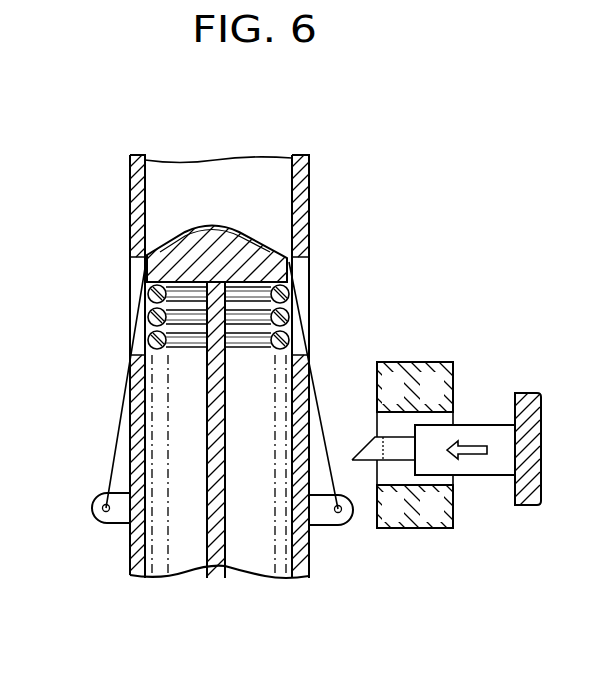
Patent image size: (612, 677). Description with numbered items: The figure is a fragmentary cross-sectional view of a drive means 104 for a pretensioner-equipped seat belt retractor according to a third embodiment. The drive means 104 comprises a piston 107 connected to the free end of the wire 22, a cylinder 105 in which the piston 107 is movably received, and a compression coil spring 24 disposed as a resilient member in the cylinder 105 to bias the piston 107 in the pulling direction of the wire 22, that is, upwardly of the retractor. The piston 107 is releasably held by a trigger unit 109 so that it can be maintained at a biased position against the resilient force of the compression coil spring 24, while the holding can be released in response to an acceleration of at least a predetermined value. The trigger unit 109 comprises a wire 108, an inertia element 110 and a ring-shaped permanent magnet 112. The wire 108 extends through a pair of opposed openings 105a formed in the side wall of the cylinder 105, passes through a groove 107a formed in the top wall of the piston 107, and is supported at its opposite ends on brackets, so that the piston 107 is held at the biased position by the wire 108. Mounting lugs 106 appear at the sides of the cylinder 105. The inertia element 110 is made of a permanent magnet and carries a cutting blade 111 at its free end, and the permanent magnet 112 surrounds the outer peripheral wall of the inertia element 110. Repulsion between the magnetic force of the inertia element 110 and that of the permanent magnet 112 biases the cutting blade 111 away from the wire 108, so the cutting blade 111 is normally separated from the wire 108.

The drive means 104 is at (218, 366).
The cylinder 105 is at (313, 210).
The openings 105a is at (135, 286).
The mounting lugs 106 is at (108, 524).
The piston 107 is at (240, 233).
The groove 107a is at (190, 232).
The wire 108 is at (312, 390).
The trigger unit 109 is at (446, 415).
The inertia element 110 is at (475, 425).
The cutting blade 111 is at (366, 465).
The permanent magnet 112 is at (430, 362).
The compression coil spring 24 is at (248, 346).
The wire 22 is at (216, 570).